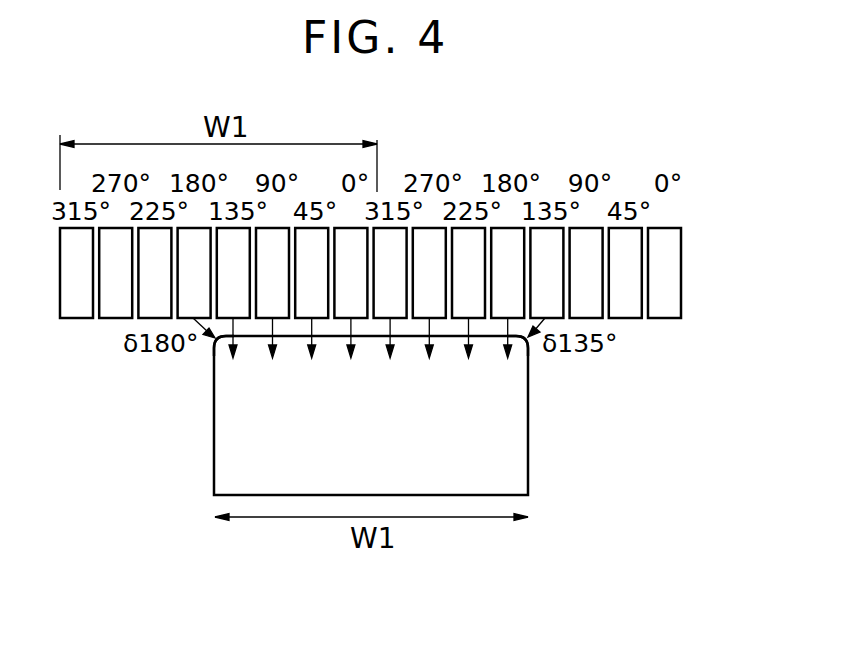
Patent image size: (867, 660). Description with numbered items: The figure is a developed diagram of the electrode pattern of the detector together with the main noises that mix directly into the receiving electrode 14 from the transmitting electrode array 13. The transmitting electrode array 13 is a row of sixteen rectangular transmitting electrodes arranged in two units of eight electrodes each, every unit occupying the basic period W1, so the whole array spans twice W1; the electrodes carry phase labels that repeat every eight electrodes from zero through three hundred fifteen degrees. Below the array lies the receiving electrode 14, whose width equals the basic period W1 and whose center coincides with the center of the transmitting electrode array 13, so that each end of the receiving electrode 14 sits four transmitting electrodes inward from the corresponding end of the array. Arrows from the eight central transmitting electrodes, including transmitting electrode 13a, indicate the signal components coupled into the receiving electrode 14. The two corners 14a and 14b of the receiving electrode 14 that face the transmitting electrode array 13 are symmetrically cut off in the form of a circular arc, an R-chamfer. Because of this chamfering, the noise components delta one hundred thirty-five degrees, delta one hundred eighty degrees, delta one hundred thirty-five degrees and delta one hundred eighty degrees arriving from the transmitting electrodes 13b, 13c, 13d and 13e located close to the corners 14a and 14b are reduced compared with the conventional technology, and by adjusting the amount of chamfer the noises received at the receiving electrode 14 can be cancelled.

The transmitting electrode array 13 is at (675, 282).
The transmitting electrode 13a is at (353, 237).
The transmitting electrode 13b is at (555, 292).
The transmitting electrode 13c is at (508, 237).
The transmitting electrode 13d is at (238, 253).
The transmitting electrode 13e is at (183, 285).
The receiving electrode 14 is at (518, 457).
The corner 14a is at (529, 346).
The corner 14b is at (214, 346).